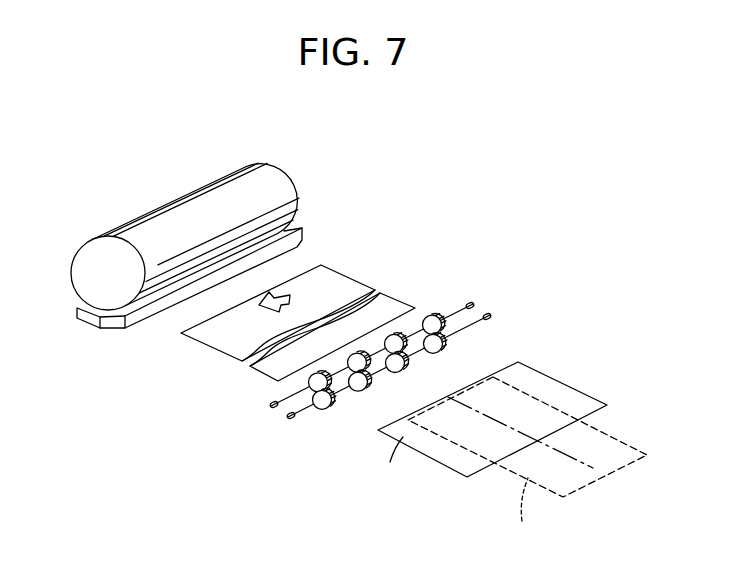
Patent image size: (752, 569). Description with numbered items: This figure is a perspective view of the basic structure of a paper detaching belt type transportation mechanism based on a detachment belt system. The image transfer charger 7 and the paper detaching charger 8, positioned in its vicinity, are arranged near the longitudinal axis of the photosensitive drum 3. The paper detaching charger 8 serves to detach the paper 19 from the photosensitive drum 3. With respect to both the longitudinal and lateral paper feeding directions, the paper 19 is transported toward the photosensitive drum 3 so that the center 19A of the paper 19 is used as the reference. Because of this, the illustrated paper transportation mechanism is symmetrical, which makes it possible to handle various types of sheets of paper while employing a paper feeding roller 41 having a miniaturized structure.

The photosensitive drum 3 is at (243, 182).
The image transfer charger 7 is at (118, 331).
The paper detaching charger 8 is at (77, 320).
The paper 19 is at (342, 278).
The paper feeding roller 41 is at (433, 320).
The center of the paper 19A is at (593, 468).